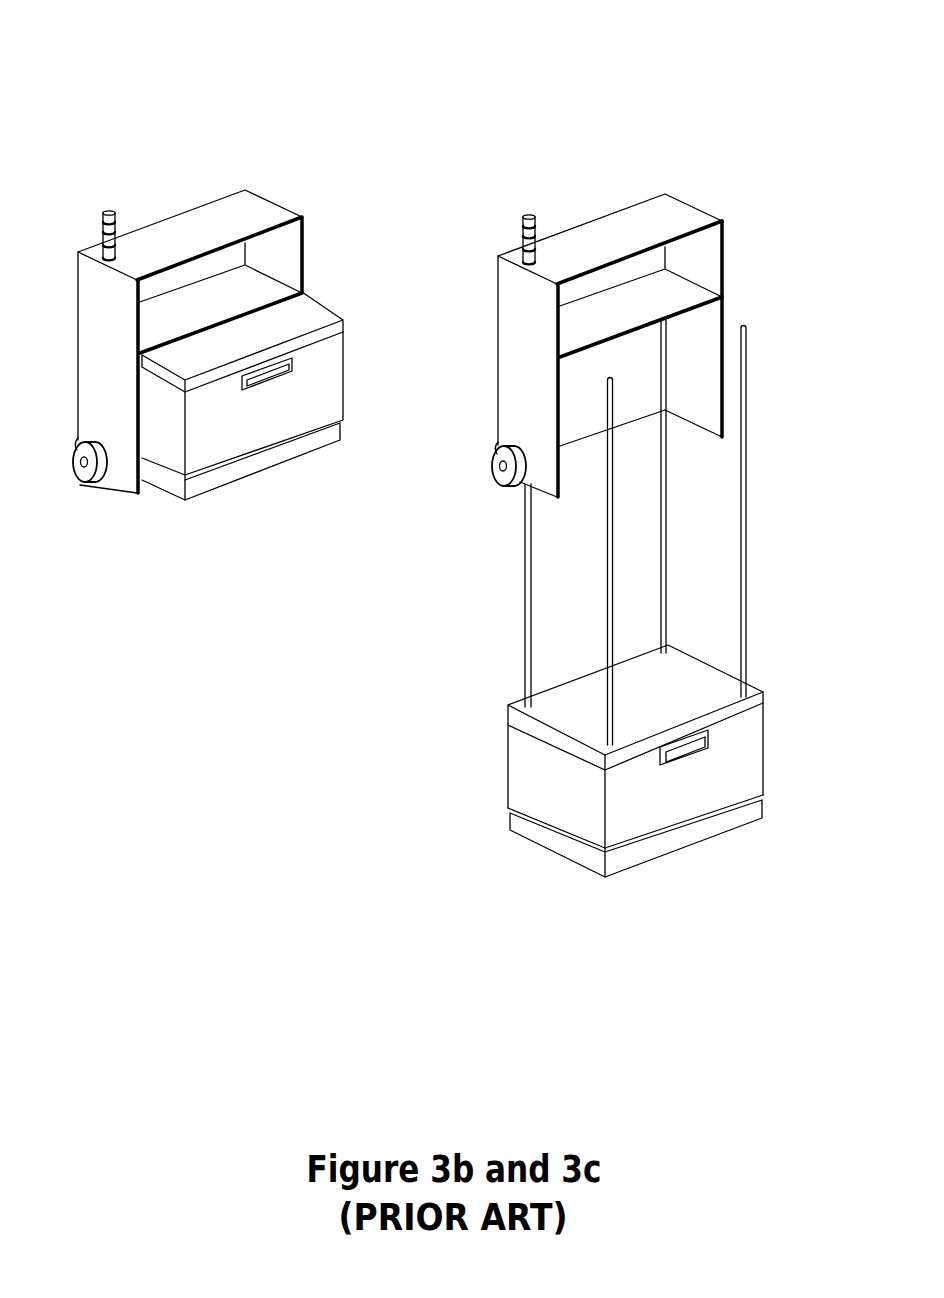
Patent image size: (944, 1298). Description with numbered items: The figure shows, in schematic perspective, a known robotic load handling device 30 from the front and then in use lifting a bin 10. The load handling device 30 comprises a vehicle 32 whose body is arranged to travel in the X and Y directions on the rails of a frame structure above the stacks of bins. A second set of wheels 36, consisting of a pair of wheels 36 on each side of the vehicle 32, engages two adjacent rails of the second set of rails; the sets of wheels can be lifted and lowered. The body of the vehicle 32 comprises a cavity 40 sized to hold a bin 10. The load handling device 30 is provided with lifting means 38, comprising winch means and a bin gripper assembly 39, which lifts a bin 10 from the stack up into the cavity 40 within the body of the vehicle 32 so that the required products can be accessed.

In FIG. 3B, the bin 10 is at (232, 422).
In FIG. 3C, the bin 10 is at (675, 738).
In FIG. 3B, the robotic load handling device 30 is at (278, 142).
In FIG. 3C, the robotic load handling device 30 is at (632, 252).
In FIG. 3C, the vehicle 32 is at (677, 217).
In FIG. 3B, the second set of wheels 36 is at (87, 478).
In FIG. 3C, the second set of wheels 36 is at (502, 480).
In FIG. 3C, the lifting means 38 is at (746, 500).
In FIG. 3C, the bin gripper assembly 39 is at (702, 687).
In FIG. 3C, the cavity 40 is at (602, 367).